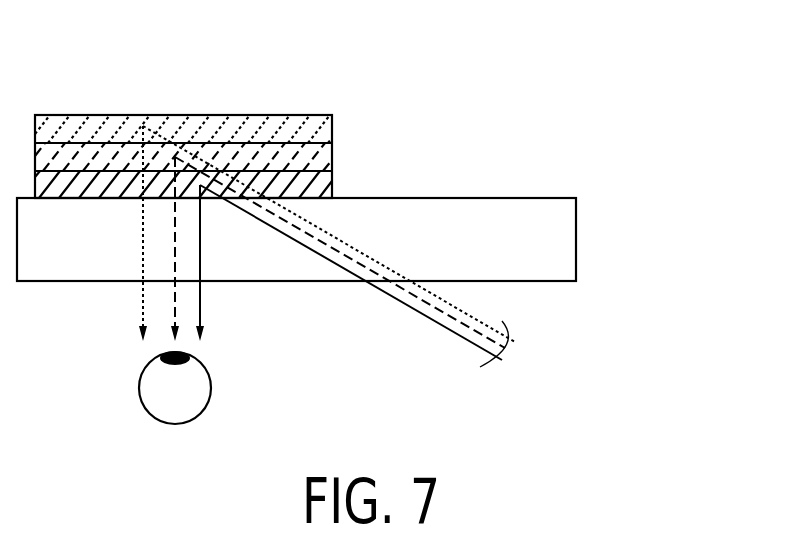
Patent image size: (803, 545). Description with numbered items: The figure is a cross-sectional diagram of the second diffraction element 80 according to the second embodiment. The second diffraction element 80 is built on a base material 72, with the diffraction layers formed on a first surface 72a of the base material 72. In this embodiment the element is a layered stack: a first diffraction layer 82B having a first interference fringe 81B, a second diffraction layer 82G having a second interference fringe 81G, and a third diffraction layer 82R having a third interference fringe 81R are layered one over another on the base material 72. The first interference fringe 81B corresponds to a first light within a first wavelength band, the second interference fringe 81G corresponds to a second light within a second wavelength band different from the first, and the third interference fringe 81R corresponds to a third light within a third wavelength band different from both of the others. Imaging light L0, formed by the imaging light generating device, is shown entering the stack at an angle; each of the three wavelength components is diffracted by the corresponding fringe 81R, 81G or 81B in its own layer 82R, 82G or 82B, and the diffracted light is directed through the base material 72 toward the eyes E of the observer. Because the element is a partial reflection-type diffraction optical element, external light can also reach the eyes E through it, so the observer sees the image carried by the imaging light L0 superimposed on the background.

The base material 72 is at (572, 250).
The first surface 72a is at (513, 198).
The second diffraction element 80 is at (172, 90).
The first interference fringe 81B is at (76, 182).
The second interference fringe 81G is at (220, 162).
The third interference fringe 81R is at (257, 125).
The third diffraction layer 82R is at (233, 98).
The second diffraction layer 82G is at (233, 112).
The first diffraction layer 82B is at (233, 126).
The imaging light L0 is at (503, 322).
The eyes E is at (137, 388).